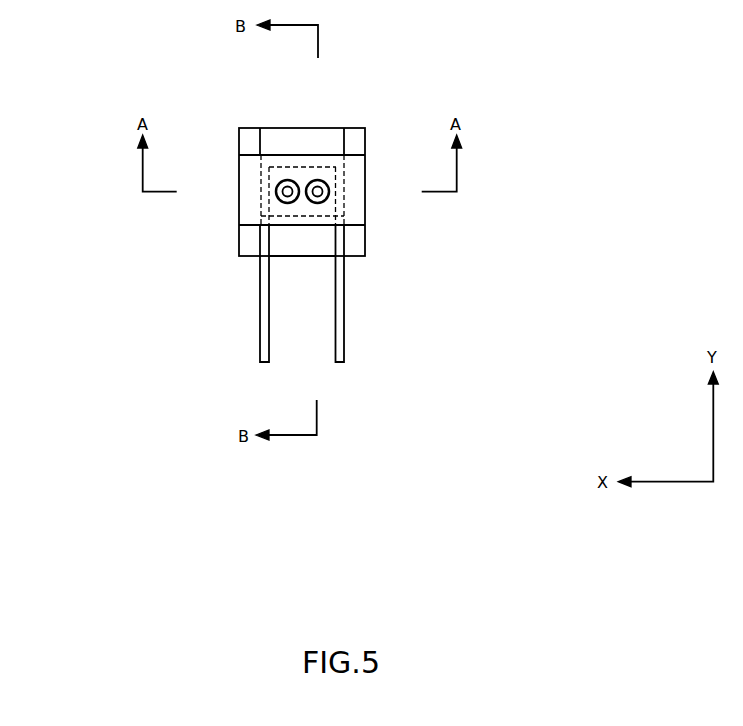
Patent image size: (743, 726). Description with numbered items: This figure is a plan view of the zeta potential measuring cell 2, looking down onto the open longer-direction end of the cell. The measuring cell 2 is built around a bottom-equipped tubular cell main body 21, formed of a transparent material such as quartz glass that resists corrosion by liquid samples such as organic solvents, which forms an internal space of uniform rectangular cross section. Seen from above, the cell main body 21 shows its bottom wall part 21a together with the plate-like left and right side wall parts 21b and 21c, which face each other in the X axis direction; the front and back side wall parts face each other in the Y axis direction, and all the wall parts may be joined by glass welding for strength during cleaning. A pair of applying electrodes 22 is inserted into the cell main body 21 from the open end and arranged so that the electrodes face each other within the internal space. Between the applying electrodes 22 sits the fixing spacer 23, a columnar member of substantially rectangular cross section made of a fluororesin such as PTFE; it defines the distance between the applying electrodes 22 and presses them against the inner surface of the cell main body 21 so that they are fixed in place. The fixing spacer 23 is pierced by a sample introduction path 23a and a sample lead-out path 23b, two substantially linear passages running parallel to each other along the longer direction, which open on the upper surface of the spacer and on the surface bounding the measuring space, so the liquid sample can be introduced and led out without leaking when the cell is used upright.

The measuring cell 2 is at (180, 79).
The cell main body 21 is at (365, 242).
The bottom wall part 21a is at (302, 257).
The left side wall part 21b is at (252, 128).
The right side wall part 21c is at (357, 128).
The applying electrodes 22 is at (257, 332).
The fixing spacer 23 is at (239, 207).
The sample introduction path 23a is at (276, 191).
The sample lead-out path 23b is at (329, 191).